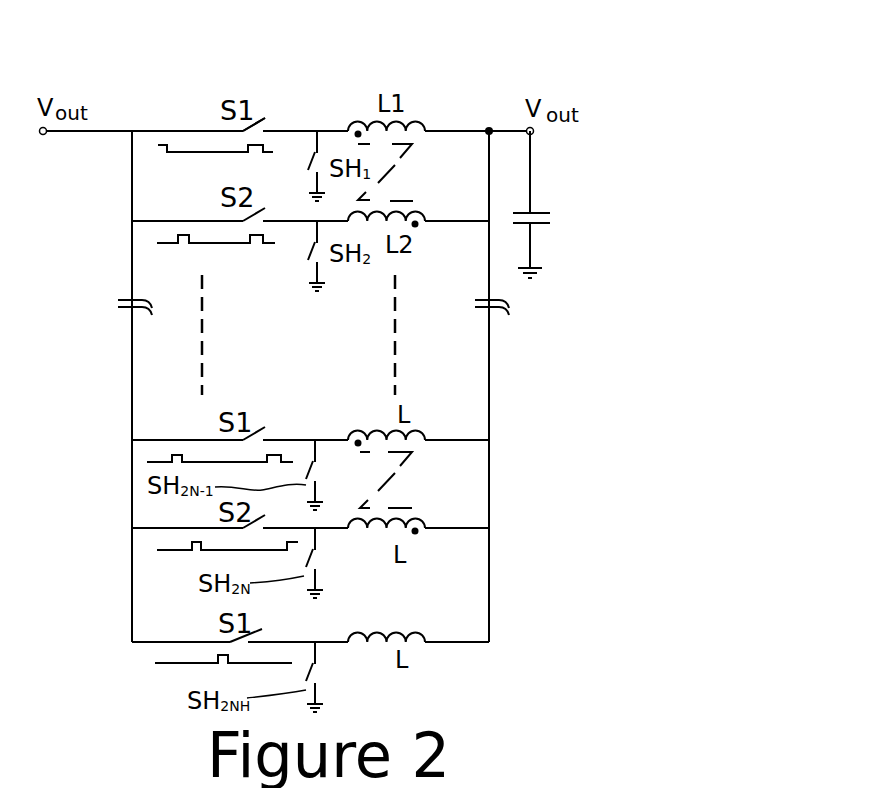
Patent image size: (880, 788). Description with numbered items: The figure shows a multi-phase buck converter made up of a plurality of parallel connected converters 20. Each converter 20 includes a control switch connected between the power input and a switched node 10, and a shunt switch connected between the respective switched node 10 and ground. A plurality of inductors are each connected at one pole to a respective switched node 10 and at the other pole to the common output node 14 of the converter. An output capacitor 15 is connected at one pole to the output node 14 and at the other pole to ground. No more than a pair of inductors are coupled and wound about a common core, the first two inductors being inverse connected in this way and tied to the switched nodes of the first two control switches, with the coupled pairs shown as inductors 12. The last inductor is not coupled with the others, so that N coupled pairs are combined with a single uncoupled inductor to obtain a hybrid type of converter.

The switched node 10 is at (317, 128).
The inductor 12 is at (423, 123).
The output node 14 is at (489, 128).
The output capacitor 15 is at (532, 199).
The converter 20 is at (279, 82).